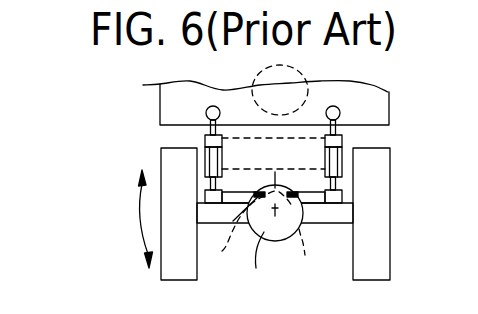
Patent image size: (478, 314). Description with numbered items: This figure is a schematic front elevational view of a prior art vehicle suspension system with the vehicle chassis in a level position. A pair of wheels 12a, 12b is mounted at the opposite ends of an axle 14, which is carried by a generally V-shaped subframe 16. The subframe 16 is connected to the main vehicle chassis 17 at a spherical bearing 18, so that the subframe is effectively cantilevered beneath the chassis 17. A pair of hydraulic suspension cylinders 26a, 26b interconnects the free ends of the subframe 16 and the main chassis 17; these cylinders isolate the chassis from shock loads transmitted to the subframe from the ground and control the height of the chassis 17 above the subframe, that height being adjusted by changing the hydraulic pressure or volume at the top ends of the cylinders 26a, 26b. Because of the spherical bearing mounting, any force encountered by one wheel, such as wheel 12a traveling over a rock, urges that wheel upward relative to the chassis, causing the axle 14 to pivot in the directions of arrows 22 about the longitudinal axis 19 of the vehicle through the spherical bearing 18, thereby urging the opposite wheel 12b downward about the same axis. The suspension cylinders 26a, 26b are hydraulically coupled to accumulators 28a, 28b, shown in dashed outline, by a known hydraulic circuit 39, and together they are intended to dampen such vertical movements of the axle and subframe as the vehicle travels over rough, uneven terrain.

The wheel 12a is at (378, 228).
The wheel 12b is at (175, 169).
The axle 14 is at (251, 264).
The subframe 16 is at (307, 195).
The main vehicle chassis 17 is at (372, 103).
The spherical bearing 18 is at (268, 227).
The longitudinal axis 19 is at (257, 238).
The arrows 22 is at (140, 218).
The hydraulic suspension cylinder 26a is at (342, 139).
The hydraulic suspension cylinder 26b is at (204, 140).
The accumulator 28a is at (338, 85).
The accumulator 28b is at (305, 70).
The hydraulic circuit 39 is at (258, 169).